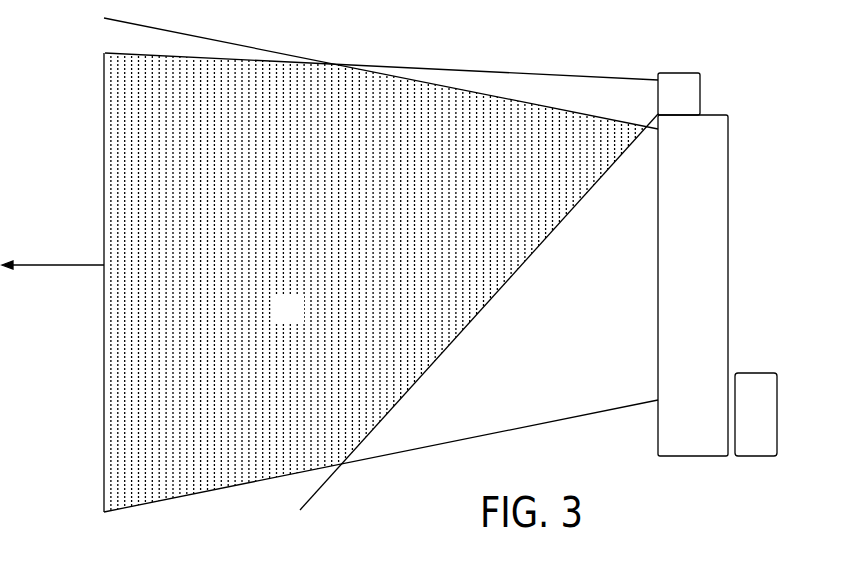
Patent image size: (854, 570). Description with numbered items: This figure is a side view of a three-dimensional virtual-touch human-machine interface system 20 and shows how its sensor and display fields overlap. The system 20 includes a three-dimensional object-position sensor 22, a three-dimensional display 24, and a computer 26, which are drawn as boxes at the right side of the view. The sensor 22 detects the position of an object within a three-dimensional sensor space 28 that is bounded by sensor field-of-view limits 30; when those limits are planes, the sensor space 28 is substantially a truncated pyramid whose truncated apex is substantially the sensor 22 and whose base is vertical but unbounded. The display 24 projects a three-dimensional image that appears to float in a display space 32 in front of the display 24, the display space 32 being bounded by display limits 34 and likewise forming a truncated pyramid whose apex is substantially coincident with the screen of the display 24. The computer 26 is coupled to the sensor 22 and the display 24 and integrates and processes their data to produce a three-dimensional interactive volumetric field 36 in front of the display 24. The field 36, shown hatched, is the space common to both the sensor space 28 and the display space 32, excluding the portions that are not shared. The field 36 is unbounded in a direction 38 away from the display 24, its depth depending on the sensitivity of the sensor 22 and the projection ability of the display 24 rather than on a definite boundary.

The three-dimensional virtual-touch human-machine interface system 20 is at (395, 285).
The three-dimensional object-position sensor 22 is at (678, 83).
The three-dimensional display 24 is at (722, 170).
The computer 26 is at (745, 382).
The sensor space 28 is at (628, 114).
The sensor field-of-view limits 30 is at (497, 72).
The display space 32 is at (587, 327).
The display limits 34 is at (212, 40).
The three-dimensional interactive volumetric field 36 is at (301, 321).
The direction 38 is at (67, 263).